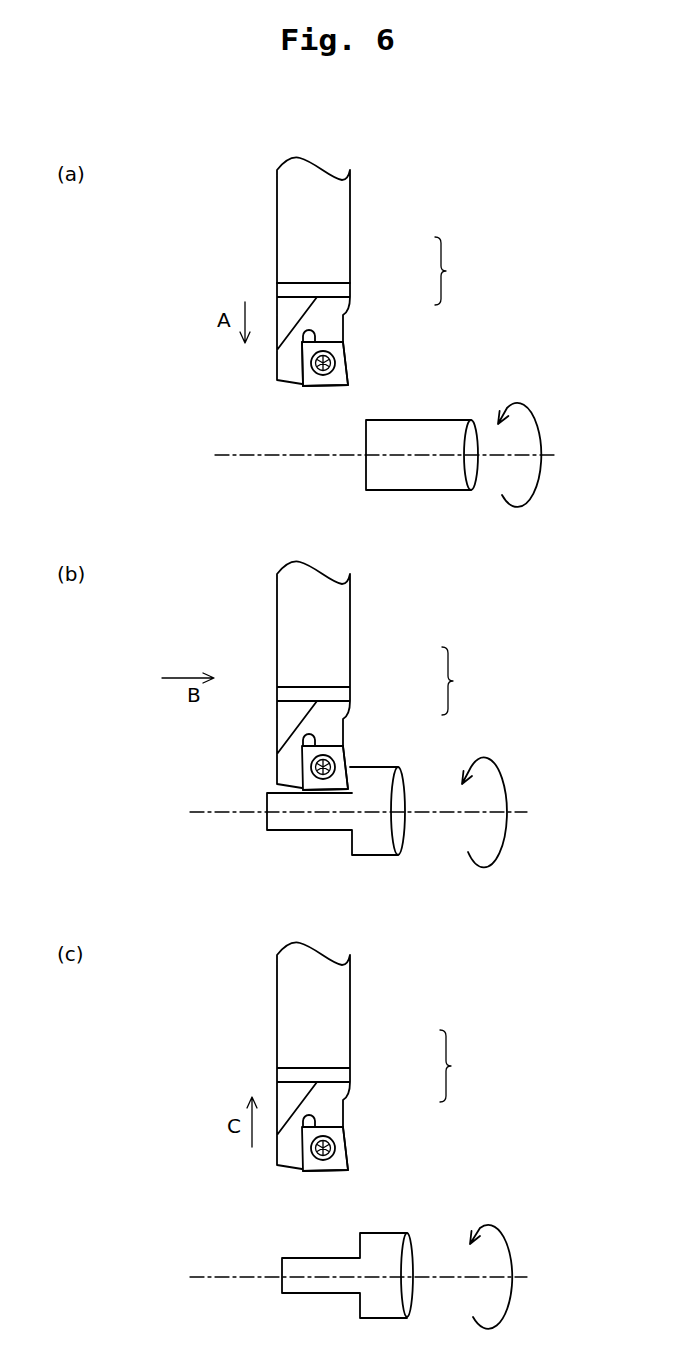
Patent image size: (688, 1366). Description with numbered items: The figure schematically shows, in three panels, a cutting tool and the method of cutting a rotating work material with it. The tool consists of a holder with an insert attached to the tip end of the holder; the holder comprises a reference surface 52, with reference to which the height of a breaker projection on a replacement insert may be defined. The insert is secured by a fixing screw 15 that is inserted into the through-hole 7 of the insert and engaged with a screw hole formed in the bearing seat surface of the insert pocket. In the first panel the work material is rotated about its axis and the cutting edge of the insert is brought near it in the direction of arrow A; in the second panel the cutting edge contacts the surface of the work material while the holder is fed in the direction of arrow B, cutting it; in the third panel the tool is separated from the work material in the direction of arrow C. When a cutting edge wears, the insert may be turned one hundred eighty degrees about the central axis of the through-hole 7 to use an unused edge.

The reference surface 52 is at (307, 222).
The through-hole 7 is at (335, 353).
The fixing screw 15 is at (313, 367).